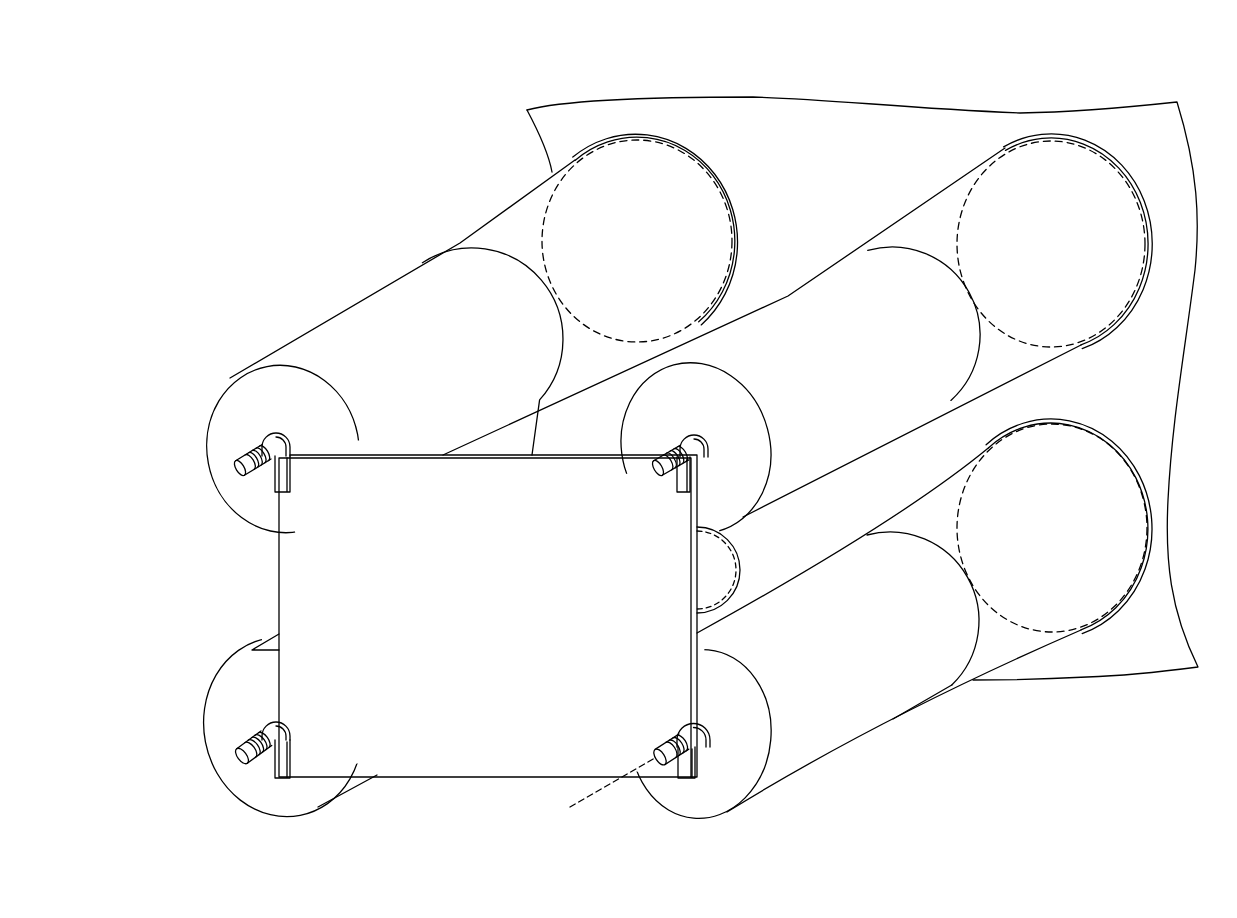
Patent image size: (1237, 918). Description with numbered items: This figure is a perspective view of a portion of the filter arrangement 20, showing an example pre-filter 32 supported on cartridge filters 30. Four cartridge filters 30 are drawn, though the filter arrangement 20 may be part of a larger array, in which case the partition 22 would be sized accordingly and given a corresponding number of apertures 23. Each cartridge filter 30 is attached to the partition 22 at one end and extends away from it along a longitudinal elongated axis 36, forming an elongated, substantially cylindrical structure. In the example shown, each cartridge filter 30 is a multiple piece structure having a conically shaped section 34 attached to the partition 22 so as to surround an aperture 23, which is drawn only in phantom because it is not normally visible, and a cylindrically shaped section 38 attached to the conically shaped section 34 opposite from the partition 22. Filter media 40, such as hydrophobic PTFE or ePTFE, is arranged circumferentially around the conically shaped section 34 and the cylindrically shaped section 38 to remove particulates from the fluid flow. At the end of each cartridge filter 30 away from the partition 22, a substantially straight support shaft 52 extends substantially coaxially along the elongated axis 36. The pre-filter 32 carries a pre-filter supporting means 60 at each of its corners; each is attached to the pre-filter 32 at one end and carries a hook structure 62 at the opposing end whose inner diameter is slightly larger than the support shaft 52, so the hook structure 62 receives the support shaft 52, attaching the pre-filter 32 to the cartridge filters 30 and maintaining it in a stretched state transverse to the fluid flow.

The filter arrangement 20 is at (291, 183).
The partition 22 is at (1170, 458).
The aperture 23 is at (955, 487).
The cartridge filter 30 is at (845, 748).
The pre-filter 32 is at (458, 780).
The conically shaped section 34 is at (987, 658).
The elongated axis 36 is at (603, 792).
The cylindrically shaped section 38 is at (912, 695).
The filter media 40 is at (887, 523).
The support shaft 52 is at (658, 464).
The pre-filter supporting means 60 is at (683, 441).
The hook structure 62 is at (708, 446).